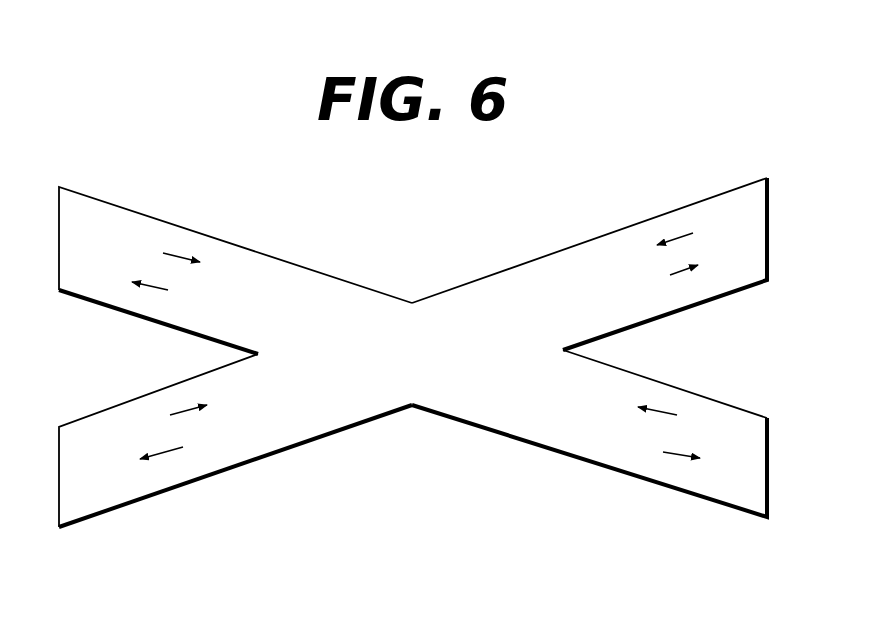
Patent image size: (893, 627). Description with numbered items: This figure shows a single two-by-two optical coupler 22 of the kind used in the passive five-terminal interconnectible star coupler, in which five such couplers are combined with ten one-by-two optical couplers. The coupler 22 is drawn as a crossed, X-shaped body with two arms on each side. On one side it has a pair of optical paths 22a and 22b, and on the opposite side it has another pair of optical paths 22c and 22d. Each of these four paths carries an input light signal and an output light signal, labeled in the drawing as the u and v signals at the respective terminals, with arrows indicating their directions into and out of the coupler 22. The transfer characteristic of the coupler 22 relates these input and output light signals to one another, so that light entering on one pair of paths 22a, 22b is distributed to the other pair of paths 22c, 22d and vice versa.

The 2×2 optical coupler 22 is at (420, 221).
The optical path 22a is at (706, 212).
The optical path 22b is at (713, 488).
The optical path 22c is at (92, 210).
The optical path 22d is at (117, 489).